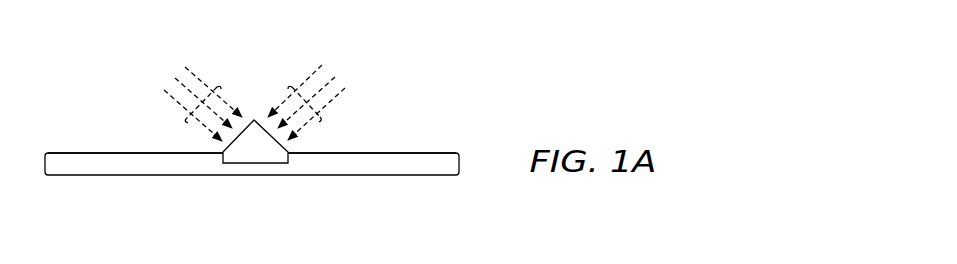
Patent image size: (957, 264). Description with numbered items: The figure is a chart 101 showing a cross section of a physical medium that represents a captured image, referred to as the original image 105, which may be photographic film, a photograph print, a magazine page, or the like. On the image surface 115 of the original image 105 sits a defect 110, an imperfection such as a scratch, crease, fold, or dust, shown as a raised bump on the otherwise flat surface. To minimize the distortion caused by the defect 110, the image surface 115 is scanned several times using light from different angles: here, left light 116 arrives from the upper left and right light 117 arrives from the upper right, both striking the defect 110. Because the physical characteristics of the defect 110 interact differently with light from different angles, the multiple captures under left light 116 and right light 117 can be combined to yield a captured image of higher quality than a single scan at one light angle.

The chart 101 is at (514, 74).
The original image 105 is at (383, 176).
The defect 110 is at (257, 163).
The image surface 115 is at (88, 153).
The left light 116 is at (217, 87).
The right light 117 is at (320, 117).